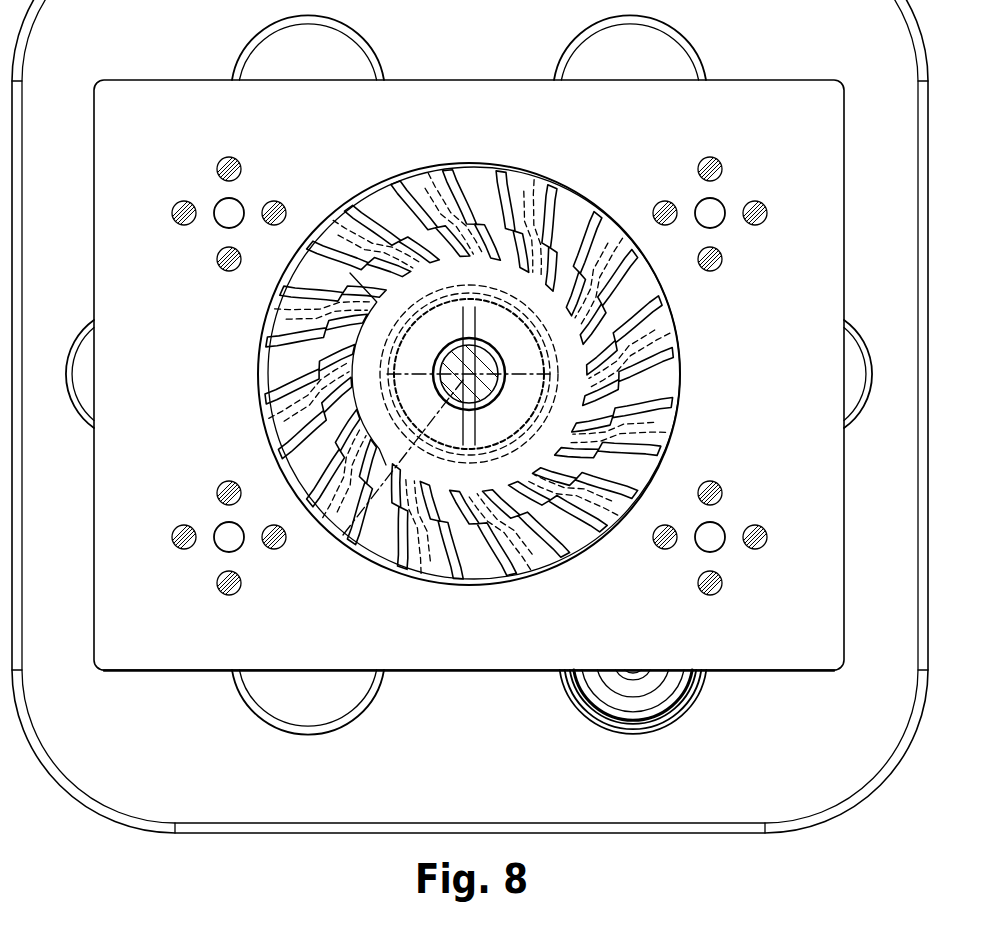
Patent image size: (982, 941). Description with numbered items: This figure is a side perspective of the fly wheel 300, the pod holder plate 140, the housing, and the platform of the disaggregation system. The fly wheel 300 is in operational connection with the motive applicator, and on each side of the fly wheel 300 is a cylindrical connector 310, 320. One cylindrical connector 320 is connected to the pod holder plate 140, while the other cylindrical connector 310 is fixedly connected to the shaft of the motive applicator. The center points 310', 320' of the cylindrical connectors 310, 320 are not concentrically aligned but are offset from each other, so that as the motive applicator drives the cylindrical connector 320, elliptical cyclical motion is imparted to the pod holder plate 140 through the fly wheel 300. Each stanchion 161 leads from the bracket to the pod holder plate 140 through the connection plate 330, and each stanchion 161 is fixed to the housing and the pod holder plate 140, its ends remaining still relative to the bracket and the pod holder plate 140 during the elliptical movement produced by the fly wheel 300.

The pod holder plate 140 is at (108, 770).
The stanchion 161 is at (229, 250).
The fly wheel 300 is at (283, 335).
The cylindrical connector 310 is at (572, 390).
The center point 310' is at (423, 471).
The cylindrical connector 320 is at (375, 374).
The center point 320' is at (390, 488).
The connection plate 330 is at (188, 645).